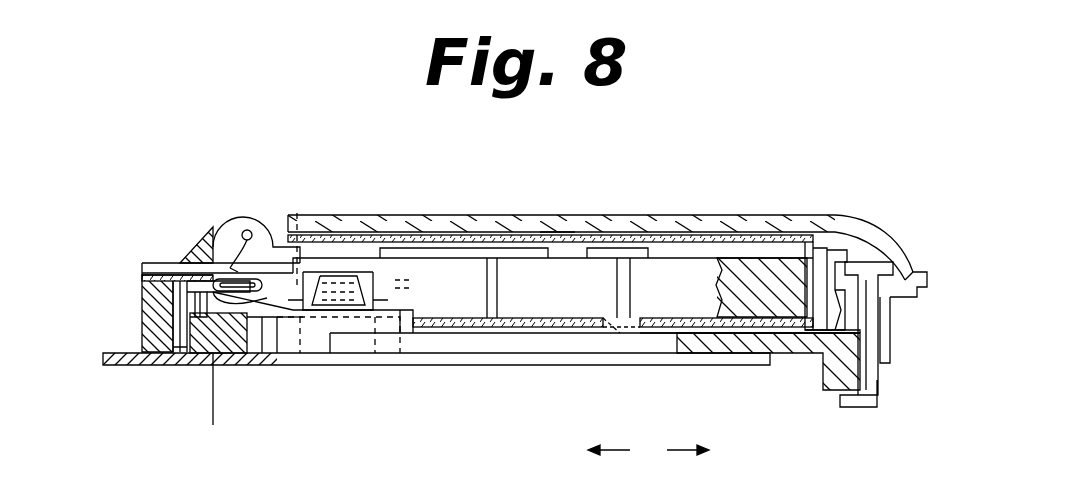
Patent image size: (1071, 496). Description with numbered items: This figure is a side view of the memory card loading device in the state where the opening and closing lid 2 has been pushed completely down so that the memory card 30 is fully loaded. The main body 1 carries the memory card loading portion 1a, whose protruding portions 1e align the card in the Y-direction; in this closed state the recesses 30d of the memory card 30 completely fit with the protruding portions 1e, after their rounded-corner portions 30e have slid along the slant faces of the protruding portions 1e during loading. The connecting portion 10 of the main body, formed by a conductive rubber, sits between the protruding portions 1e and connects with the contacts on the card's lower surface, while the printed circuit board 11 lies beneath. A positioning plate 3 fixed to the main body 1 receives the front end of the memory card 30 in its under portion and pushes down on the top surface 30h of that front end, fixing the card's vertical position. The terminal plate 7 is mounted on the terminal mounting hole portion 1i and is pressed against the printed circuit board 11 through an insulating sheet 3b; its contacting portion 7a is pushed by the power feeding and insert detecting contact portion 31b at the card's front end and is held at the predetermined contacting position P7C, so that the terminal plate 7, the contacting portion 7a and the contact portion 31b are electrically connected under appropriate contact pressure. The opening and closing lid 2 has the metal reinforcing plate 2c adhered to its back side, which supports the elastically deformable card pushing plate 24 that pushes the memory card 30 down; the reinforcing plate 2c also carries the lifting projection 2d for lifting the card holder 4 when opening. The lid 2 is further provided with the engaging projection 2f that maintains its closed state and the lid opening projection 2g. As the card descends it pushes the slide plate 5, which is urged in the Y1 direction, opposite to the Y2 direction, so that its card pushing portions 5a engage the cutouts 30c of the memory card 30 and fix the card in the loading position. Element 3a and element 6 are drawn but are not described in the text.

The main body 1 is at (780, 352).
The memory card loading portion 1a is at (443, 333).
The protruding portions 1e is at (352, 270).
The terminal mounting hole portion 1i is at (173, 335).
The opening and closing lid 2 is at (708, 215).
The reinforcing plate 2c is at (557, 232).
The lifting projection 2d is at (760, 300).
The engaging projection 2f is at (890, 292).
The lid opening projection 2g is at (915, 272).
The positioning plate 3 is at (157, 263).
The fixed member portion 3a is at (243, 217).
The insulating sheet 3b is at (143, 273).
The card holder 4 is at (507, 330).
The slide plate 5 is at (733, 334).
The card pushing portions 5a is at (811, 244).
The pin 6 is at (873, 390).
The terminal plate 7 is at (187, 297).
The contacting portion 7a is at (207, 307).
The connecting portion 10 is at (372, 366).
The printed circuit board 11 is at (637, 362).
The card pushing plate 24 is at (838, 245).
The memory card 30 is at (653, 237).
The cutouts 30c is at (808, 250).
The recesses 30d is at (337, 270).
The rounded-corner portions 30e is at (298, 210).
The top surface 30h is at (253, 278).
The power feeding and insert detecting contact portion 31b is at (230, 270).
The position P 7C P7C is at (215, 410).
The Y1 direction Y1 is at (609, 463).
The direction Y2 is at (688, 463).